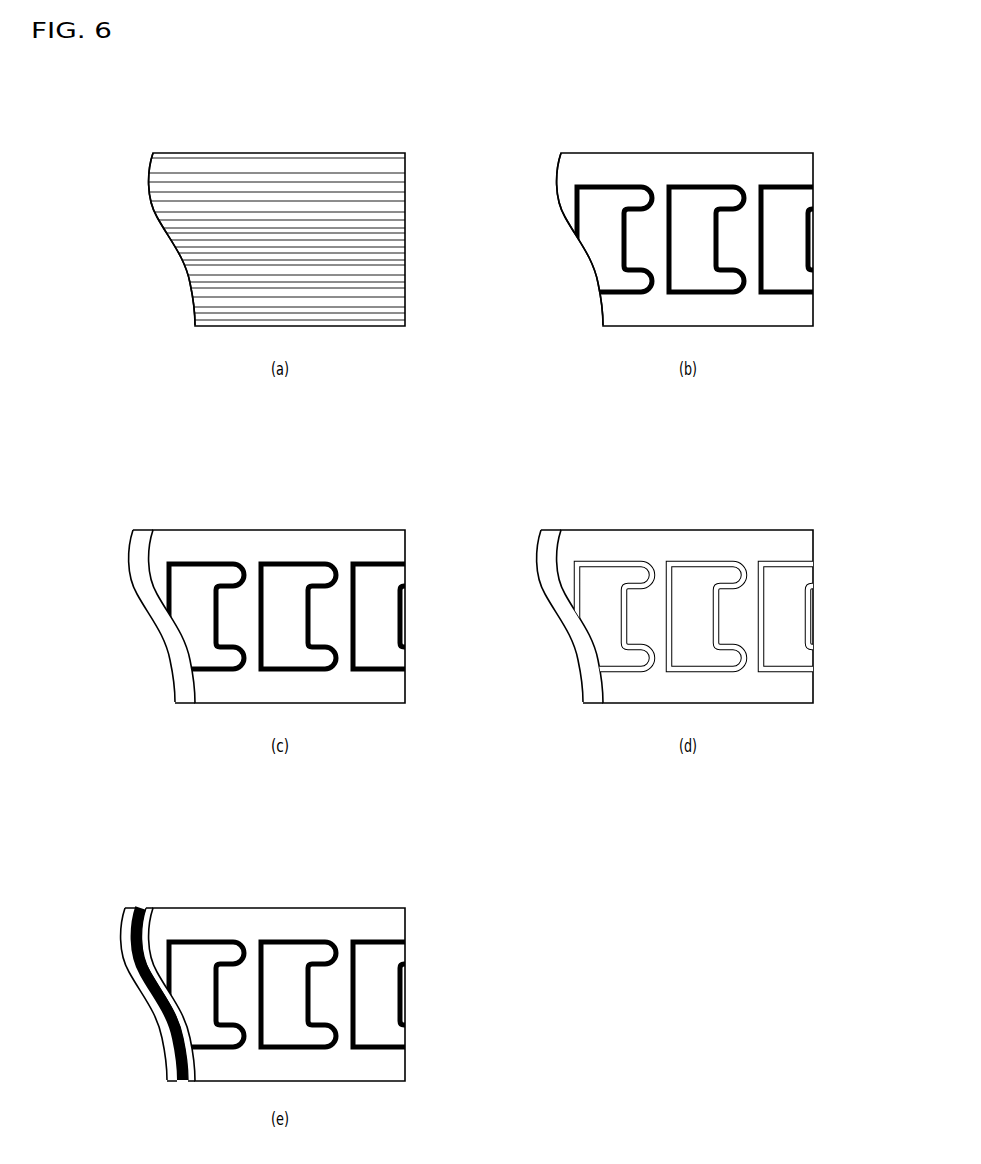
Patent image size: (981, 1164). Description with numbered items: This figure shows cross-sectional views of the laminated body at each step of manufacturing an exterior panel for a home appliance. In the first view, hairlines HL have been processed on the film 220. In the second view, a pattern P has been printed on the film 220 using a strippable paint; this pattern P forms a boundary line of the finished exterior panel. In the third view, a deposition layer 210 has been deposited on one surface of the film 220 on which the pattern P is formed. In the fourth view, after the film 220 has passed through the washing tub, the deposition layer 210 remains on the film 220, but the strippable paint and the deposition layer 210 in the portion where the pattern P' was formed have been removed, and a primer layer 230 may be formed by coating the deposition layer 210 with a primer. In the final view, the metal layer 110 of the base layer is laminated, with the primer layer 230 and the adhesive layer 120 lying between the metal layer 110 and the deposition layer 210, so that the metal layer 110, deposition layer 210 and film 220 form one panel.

The metal layer 110 is at (128, 906).
The adhesive layer 120 is at (180, 1082).
The deposition layer 210 is at (146, 537).
The film 220 is at (192, 284).
The primer layer 230 is at (474, 807).
The pattern P is at (502, 394).
The removed pattern portion P' is at (502, 770).
The hairlines HL is at (188, 249).